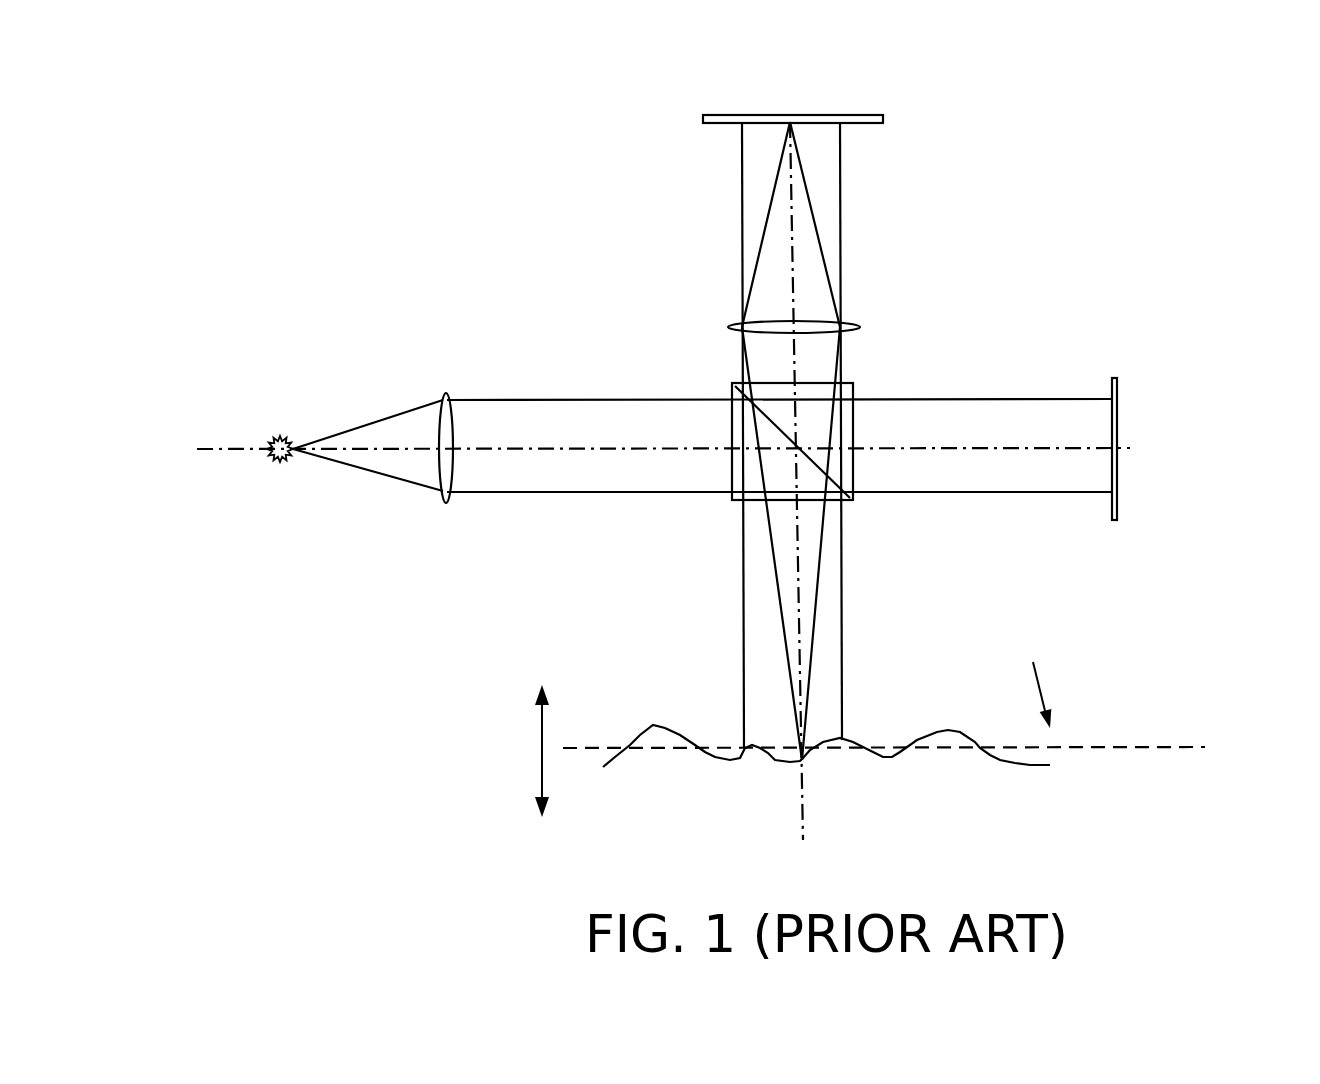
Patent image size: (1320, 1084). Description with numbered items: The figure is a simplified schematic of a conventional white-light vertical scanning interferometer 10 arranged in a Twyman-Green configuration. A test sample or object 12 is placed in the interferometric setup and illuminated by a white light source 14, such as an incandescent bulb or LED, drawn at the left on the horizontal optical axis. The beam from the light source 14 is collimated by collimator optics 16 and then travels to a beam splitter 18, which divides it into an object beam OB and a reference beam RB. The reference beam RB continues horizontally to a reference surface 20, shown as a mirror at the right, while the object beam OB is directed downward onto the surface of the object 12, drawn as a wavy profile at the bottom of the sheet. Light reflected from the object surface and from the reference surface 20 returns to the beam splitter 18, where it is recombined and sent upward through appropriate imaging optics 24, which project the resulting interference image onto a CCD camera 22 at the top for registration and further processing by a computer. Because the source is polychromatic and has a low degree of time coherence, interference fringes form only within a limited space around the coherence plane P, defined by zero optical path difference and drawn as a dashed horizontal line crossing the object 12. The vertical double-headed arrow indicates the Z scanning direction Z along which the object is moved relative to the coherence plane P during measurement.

The vertical scanning interferometer 10 is at (1145, 221).
The object 12 is at (900, 750).
The light source 14 is at (275, 462).
The collimator optics 16 is at (443, 503).
The beam splitter 18 is at (732, 502).
The reference surface 20 is at (1112, 380).
The CCD camera 22 is at (883, 120).
The imaging optics 24 is at (733, 327).
The reference beam RB is at (1008, 492).
The object beam OB is at (838, 642).
The coherence plane P is at (1160, 747).
The Z scanning direction Z is at (803, 832).